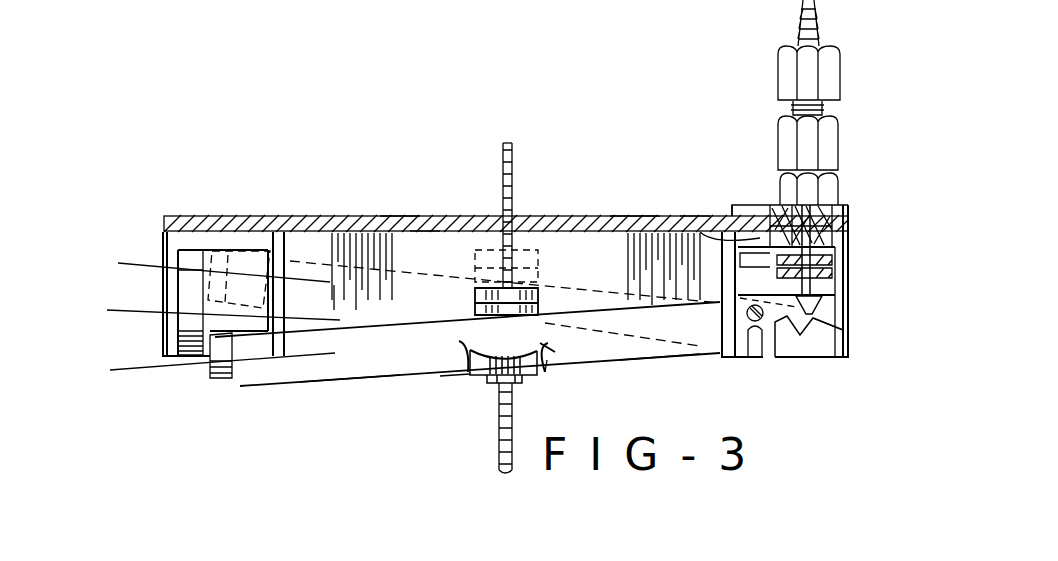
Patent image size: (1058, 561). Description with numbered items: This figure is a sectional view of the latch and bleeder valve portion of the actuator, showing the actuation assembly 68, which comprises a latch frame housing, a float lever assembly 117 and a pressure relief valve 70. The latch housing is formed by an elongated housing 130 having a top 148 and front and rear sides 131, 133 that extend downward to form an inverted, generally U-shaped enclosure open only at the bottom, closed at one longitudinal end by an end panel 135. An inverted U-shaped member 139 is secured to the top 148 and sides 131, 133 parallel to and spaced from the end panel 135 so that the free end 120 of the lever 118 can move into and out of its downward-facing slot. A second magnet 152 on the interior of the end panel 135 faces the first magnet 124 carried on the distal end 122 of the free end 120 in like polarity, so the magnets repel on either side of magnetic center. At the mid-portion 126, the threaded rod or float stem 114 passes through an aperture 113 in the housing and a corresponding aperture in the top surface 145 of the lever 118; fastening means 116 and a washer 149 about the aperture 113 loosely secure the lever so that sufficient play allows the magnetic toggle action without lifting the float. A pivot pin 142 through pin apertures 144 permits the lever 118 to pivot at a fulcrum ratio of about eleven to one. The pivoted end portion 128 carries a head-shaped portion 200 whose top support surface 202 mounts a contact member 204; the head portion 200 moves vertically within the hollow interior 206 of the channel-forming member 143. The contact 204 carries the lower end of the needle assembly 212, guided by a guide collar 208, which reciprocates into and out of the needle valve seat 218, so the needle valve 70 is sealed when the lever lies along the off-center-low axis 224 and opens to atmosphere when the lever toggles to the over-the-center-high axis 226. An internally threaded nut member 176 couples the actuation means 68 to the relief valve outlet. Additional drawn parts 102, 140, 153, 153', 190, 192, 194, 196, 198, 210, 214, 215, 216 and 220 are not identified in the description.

The actuation assembly 68 is at (636, 72).
The pressure relief valve 70 is at (845, 73).
The cup member 102 is at (478, 378).
The aperture 113 is at (519, 215).
The threaded rod 114 is at (500, 387).
The fastening means 116 is at (568, 372).
The float lever assembly 117 is at (661, 386).
The lever 118 is at (350, 386).
The free end 120 is at (280, 385).
The distal end 122 is at (105, 311).
The first magnet 124 is at (222, 379).
The mid-portion 126 is at (545, 355).
The pivoted end portion 128 is at (760, 358).
The elongated housing 130 is at (313, 212).
The front side 131 is at (345, 233).
The rear side 133 is at (400, 213).
The end panel 135 is at (178, 295).
The inverted U-shaped member 139 is at (284, 279).
The direction arrow 140 is at (862, 280).
The pivot pin 142 is at (740, 358).
The inverted U-shaped member 143 is at (808, 336).
The pin apertures 144 is at (765, 350).
The top surface 145 is at (462, 383).
The top 148 is at (416, 214).
The washer 149 is at (545, 291).
The second magnet 152 is at (186, 357).
The threaded shaft 153 is at (483, 215).
The shaft upper end 153' is at (539, 125).
The internally-threaded nut member 176 is at (850, 188).
The plate section 190 is at (693, 214).
The hatched strip right 192 is at (682, 238).
The inner wall 194 is at (847, 313).
The raised block 196 is at (850, 208).
The block edge 198 is at (744, 203).
The head-shaped portion 200 is at (847, 333).
The top support surface 202 is at (845, 270).
The contact member 204 is at (735, 297).
The hollow interior 206 is at (832, 358).
The guide collar 208 is at (842, 246).
The inner chamber 210 is at (788, 280).
The needle assembly 212 is at (757, 262).
The lower nut 214 is at (842, 252).
The curved member 215 is at (770, 231).
The threaded bore 216 is at (778, 206).
The needle valve seat 218 is at (855, 186).
The neck 220 is at (792, 200).
The lever axis 224 is at (132, 369).
The lever axis 226 is at (118, 262).